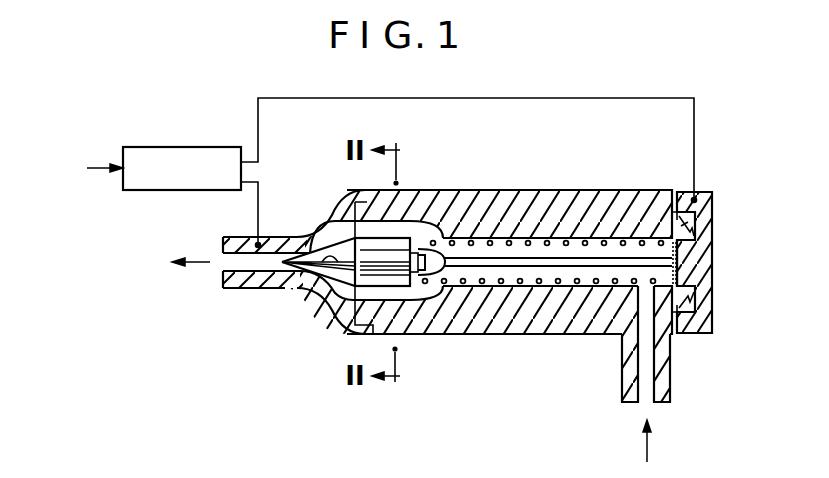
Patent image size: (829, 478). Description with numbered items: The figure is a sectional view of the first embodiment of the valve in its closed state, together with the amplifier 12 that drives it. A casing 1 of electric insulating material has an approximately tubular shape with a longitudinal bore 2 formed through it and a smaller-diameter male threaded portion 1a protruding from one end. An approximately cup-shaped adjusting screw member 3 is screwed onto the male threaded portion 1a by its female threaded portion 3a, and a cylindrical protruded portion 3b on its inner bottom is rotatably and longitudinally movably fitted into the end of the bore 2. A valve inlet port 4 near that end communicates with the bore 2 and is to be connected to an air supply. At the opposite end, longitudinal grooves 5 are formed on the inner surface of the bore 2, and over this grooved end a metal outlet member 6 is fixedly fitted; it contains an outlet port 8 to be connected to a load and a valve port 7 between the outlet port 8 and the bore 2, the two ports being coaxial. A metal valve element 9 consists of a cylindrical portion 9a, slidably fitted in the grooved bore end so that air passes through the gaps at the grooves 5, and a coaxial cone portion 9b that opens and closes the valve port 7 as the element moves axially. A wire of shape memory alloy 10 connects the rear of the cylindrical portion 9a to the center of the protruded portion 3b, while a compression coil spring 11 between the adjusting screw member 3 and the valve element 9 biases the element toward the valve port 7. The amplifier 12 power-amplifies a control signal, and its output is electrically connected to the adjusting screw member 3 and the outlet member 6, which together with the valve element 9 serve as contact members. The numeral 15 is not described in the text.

The casing 1 is at (498, 203).
The male threaded portion 1a is at (683, 322).
The longitudinal bore 2 is at (530, 285).
The adjusting screw member 3 is at (712, 302).
The female threaded portion 3a is at (698, 226).
The protruded portion 3b is at (700, 270).
The valve inlet port 4 is at (640, 402).
The grooves 5 is at (370, 217).
The outlet member 6 is at (323, 224).
The valve port 7 is at (333, 266).
The outlet port 8 is at (230, 262).
The valve element 9 is at (358, 282).
The cylindrical portion 9a is at (403, 243).
The cone portion 9b is at (302, 270).
The shape memory alloy 10 is at (572, 262).
The compression coil spring 11 is at (513, 284).
The amplifier 12 is at (181, 147).
The seal 15 is at (688, 250).